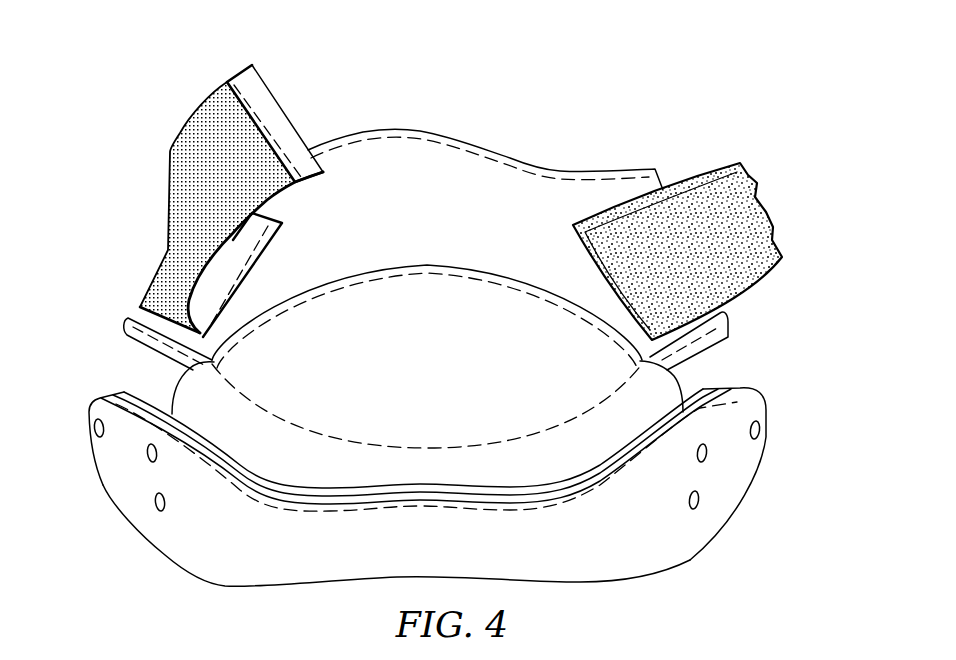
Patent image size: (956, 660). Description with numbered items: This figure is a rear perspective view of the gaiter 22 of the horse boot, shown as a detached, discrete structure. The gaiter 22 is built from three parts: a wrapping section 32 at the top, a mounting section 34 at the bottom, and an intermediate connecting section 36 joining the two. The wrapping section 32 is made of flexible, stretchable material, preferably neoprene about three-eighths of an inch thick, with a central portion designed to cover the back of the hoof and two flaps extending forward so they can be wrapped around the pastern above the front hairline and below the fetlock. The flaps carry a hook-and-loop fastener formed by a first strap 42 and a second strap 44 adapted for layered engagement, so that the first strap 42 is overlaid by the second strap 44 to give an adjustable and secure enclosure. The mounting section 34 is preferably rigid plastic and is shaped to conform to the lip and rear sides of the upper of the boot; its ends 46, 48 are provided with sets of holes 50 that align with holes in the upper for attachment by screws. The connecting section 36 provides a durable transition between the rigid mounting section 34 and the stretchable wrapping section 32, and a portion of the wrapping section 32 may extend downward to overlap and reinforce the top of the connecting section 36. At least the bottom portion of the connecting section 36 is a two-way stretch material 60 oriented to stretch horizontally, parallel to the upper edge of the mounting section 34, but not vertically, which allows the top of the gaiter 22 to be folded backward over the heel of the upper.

The gaiter 22 is at (620, 114).
The wrapping section 32 is at (475, 153).
The mounting section 34 is at (213, 572).
The connecting section 36 is at (450, 281).
The first strap 42 is at (759, 214).
The second strap 44 is at (177, 150).
The end of mounting section 46 is at (748, 409).
The end of mounting section 48 is at (104, 409).
The holes 50 is at (93, 434).
The two-way stretch material 60 is at (390, 469).